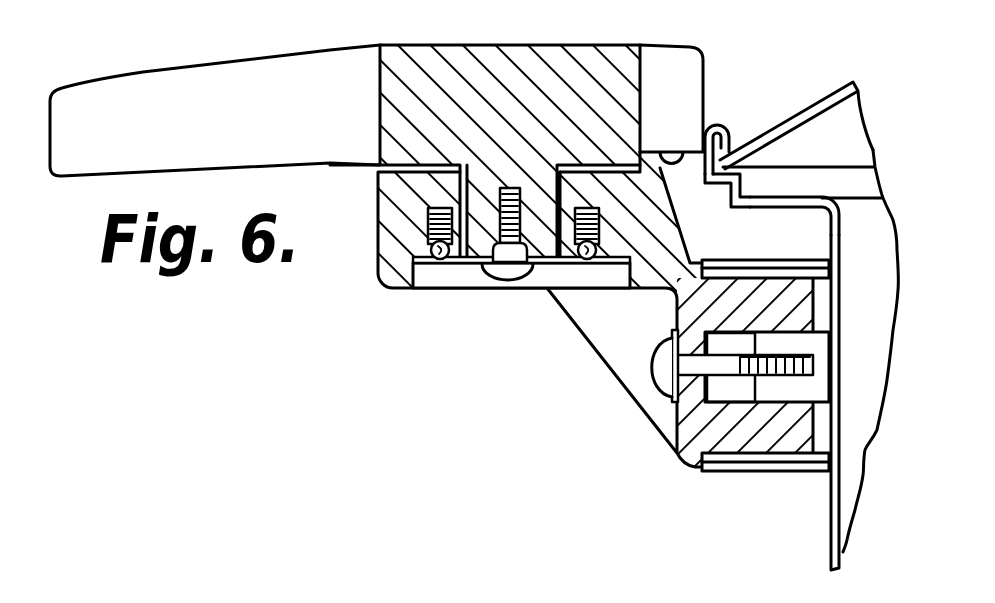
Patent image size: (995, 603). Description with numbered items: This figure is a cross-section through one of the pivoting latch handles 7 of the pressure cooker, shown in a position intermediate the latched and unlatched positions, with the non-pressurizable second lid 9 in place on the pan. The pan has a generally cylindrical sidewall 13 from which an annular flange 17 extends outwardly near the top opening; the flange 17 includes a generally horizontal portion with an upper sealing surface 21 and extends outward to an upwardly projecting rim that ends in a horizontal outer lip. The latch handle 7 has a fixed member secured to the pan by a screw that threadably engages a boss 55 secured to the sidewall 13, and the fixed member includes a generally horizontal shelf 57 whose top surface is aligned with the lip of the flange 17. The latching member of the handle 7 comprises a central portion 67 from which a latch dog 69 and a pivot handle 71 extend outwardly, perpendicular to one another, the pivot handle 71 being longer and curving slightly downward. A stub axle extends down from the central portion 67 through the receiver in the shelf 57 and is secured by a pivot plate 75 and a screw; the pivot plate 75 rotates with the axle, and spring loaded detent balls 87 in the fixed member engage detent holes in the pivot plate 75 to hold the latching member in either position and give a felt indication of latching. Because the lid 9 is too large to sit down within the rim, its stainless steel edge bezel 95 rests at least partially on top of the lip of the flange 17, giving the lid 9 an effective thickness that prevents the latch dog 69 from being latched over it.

The pivoting latch handle 7 is at (302, 350).
The second or non-pressurizable lid 9 is at (823, 92).
The sidewall 13 is at (829, 540).
The annular flange 17 is at (727, 193).
The upper sealing surface 21 is at (801, 217).
The boss 55 is at (820, 332).
The shelf 57 is at (378, 238).
The central portion 67 is at (518, 45).
The latch dog 69 is at (670, 46).
The pivot handle 71 is at (146, 73).
The pivot plate 75 is at (450, 263).
The spring loaded detent ball 87 is at (573, 265).
The edge bezel 95 is at (717, 124).